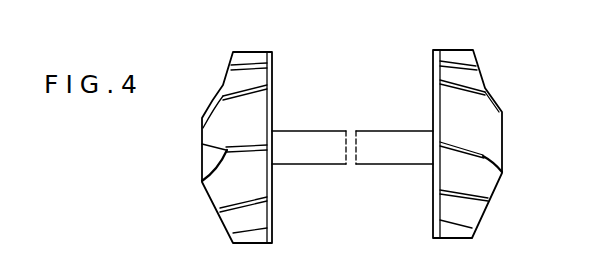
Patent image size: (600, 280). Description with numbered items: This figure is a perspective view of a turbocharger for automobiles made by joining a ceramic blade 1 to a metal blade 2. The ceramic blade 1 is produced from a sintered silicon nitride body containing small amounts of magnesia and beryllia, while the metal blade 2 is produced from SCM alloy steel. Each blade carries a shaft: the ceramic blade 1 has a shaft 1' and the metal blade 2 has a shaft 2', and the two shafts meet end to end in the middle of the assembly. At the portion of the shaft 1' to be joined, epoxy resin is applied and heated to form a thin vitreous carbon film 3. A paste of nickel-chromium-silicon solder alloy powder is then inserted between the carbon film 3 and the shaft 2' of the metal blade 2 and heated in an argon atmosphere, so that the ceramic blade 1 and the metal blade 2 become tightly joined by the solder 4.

The ceramic blade 1 is at (237, 125).
The metal blade 2 is at (475, 134).
The shaft of the ceramic blade 1' is at (309, 121).
The shaft of the metal blade 2' is at (394, 121).
The vitreous carbon film 3 is at (347, 165).
The solder 4 is at (355, 165).